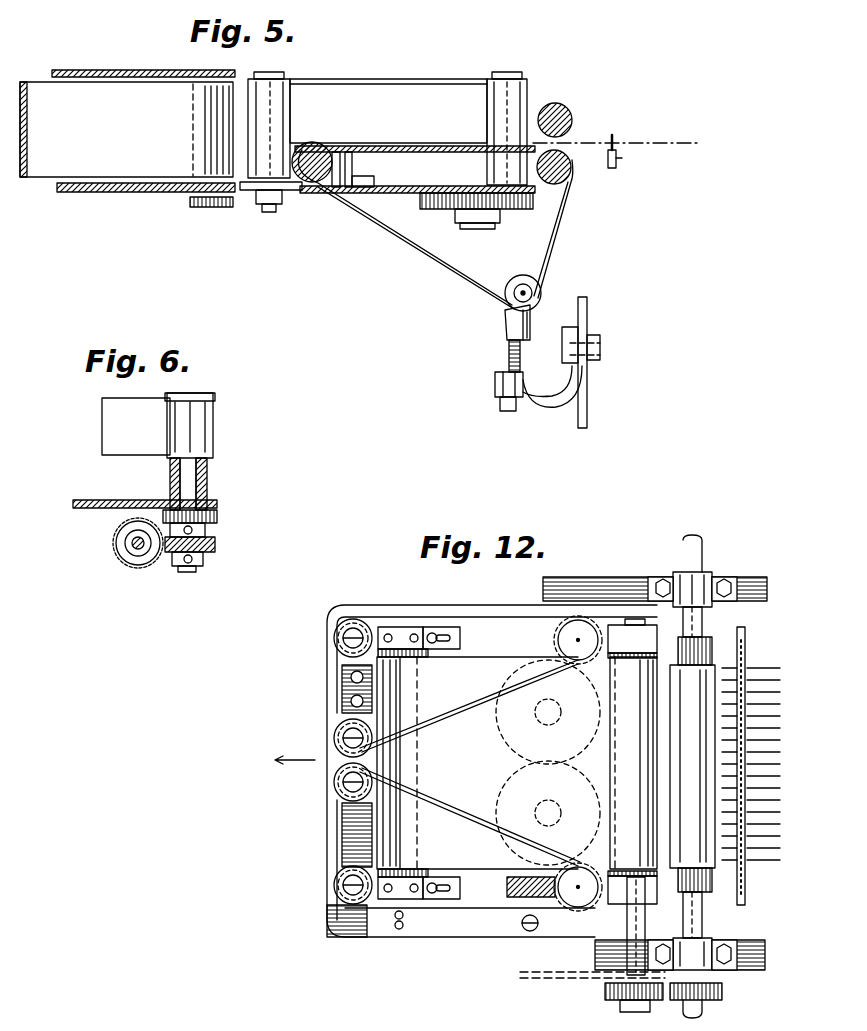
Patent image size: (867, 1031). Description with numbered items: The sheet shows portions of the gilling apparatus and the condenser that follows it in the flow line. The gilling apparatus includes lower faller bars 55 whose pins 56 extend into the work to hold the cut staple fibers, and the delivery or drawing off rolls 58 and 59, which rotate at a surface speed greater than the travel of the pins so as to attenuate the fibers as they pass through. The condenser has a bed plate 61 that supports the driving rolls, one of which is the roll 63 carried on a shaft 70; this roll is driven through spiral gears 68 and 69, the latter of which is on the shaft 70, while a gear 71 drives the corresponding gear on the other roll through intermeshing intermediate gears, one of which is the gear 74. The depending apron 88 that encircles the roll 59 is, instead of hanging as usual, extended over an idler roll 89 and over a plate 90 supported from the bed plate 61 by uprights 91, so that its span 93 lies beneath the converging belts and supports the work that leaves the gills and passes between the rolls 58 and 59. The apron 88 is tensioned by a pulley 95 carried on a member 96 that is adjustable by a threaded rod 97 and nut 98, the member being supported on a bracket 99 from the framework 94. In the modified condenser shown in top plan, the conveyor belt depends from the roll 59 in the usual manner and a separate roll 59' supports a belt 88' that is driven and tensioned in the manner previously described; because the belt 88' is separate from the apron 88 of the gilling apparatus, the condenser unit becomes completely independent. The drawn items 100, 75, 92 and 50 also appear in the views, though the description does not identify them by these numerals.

In FIG. 5, the cylinder 100 is at (127, 138).
In FIG. 5, the drum 75 is at (331, 92).
In FIG. 5, the span 93 is at (425, 146).
In FIG. 5, the uprights 91 is at (352, 166).
In FIG. 5, the plate 90 is at (389, 173).
In FIG. 5, the idler roll 89 is at (312, 186).
In FIG. 5, the bed plate 61 is at (404, 193).
In FIG. 5, the intermediate gear 74 is at (444, 210).
In FIG. 5, the apron 88 is at (435, 229).
In FIG. 12, the apron 88 is at (746, 779).
In FIG. 5, the pulley 95 is at (522, 280).
In FIG. 5, the member 96 is at (506, 330).
In FIG. 5, the threaded rod 97 is at (508, 357).
In FIG. 5, the nut 98 is at (497, 398).
In FIG. 5, the bracket 99 is at (548, 408).
In FIG. 5, the framework 94 is at (588, 396).
In FIG. 5, the delivery roll 58 is at (567, 112).
In FIG. 5, the strip 92 is at (582, 138).
In FIG. 5, the pins 56 is at (614, 135).
In FIG. 5, the direction 50 is at (675, 138).
In FIG. 5, the lower faller bars 55 is at (620, 156).
In FIG. 5, the delivery roll 59 is at (576, 172).
In FIG. 12, the delivery roll 59 is at (662, 776).
In FIG. 6, the driving roll 63 is at (196, 434).
In FIG. 6, the shaft 70 is at (208, 474).
In FIG. 6, the gear 71 is at (218, 516).
In FIG. 6, the spiral gear 69 is at (216, 546).
In FIG. 6, the spiral gear 68 is at (128, 560).
In FIG. 12, the belt 88' is at (470, 763).
In FIG. 12, the separate roll 59' is at (592, 944).